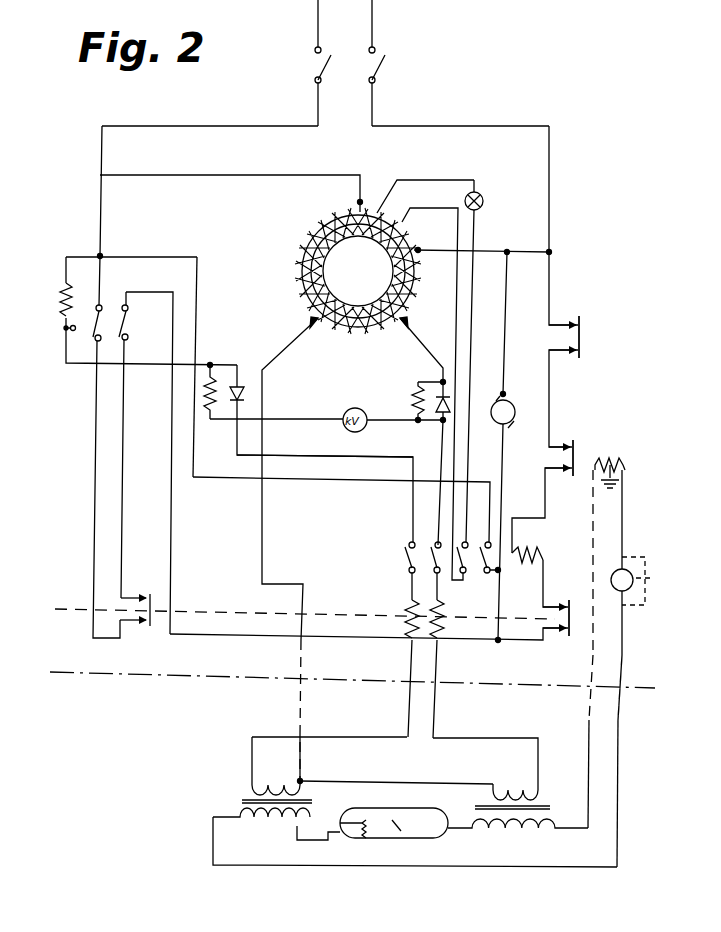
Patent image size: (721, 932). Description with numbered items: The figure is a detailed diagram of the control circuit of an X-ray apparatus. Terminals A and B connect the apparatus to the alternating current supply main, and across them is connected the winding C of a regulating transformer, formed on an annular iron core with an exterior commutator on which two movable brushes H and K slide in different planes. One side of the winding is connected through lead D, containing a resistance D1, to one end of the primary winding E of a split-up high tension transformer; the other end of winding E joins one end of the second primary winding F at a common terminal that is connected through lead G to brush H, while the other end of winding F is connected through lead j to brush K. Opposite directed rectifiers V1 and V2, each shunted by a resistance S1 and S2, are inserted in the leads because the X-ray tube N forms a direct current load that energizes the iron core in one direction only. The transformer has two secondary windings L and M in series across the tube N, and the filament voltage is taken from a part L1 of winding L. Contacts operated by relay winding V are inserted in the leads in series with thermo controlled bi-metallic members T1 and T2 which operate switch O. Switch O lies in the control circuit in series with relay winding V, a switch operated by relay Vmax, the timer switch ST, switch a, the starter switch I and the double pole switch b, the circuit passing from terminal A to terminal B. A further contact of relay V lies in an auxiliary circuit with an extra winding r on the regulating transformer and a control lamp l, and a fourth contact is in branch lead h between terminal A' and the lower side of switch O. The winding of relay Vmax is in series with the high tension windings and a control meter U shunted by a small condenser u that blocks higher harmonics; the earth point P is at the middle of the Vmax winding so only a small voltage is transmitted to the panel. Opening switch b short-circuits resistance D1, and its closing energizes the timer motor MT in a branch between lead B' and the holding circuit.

The supply terminal A is at (304, 40).
The supply terminal B is at (386, 40).
The terminal A' is at (298, 101).
The lead B' is at (388, 101).
The resistance D1 is at (62, 300).
The switch b is at (101, 323).
The switch a is at (128, 323).
The regulating transformer winding C is at (411, 286).
The extra winding r is at (390, 214).
The control lamp l is at (482, 202).
The movable tapping or brush H is at (315, 323).
The movable tapping or brush K is at (402, 324).
The lead G is at (265, 525).
The resistance S1 is at (217, 406).
The rectifier V1 is at (242, 385).
The resistance S2 is at (418, 394).
The rectifier V2 is at (437, 414).
The lead j is at (440, 456).
The branch lead h is at (312, 482).
The lead D is at (411, 517).
The thermo controlled member T1 is at (405, 612).
The thermo controlled member T2 is at (441, 613).
The timer motor MT is at (508, 398).
The timer switch ST is at (580, 324).
The earth point P is at (592, 480).
The relay winding V is at (536, 552).
The operating switch O is at (576, 611).
The relay Vmax is at (593, 457).
The control meter U is at (620, 592).
The small condenser u is at (645, 570).
The starter switch I is at (152, 602).
The primary winding E is at (268, 786).
The primary winding F is at (508, 790).
The secondary winding L is at (270, 826).
The part of high tension winding L1 is at (308, 842).
The X-ray tube N is at (413, 836).
The secondary winding M is at (514, 832).